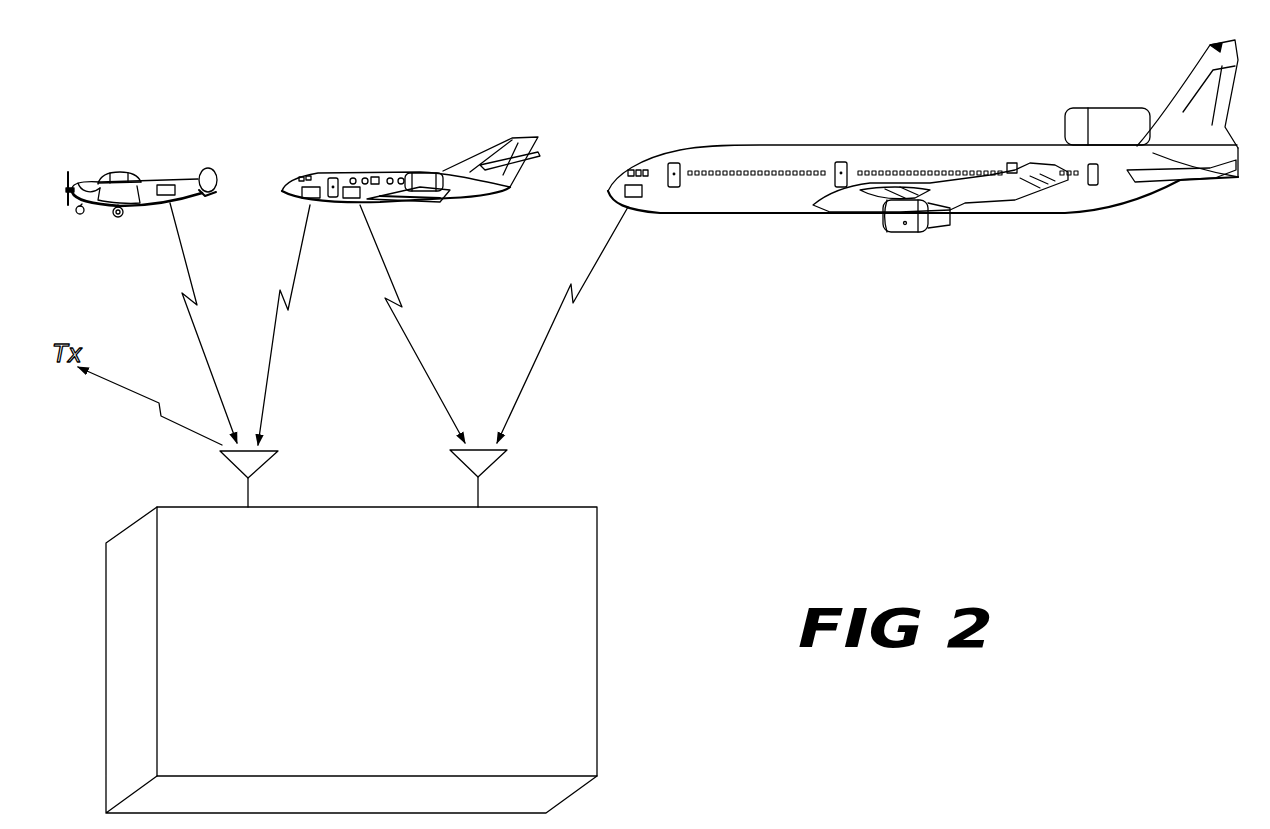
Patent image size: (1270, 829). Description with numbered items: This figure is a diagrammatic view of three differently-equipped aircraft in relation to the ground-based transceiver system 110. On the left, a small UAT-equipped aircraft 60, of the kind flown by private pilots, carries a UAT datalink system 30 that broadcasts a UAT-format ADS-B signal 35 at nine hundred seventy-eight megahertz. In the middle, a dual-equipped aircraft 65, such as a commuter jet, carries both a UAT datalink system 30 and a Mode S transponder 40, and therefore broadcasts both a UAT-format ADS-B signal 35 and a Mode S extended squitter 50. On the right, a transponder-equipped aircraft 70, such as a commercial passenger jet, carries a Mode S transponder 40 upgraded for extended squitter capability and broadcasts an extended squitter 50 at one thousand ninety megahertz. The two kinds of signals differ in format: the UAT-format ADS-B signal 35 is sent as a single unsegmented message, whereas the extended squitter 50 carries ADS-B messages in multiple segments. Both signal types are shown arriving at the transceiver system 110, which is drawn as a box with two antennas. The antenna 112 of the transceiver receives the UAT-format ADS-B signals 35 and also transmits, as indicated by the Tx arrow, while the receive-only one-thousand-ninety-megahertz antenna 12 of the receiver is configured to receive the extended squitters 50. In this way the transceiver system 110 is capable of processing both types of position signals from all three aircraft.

The UAT-equipped aircraft 60 is at (160, 180).
The dual-equipped aircraft 65 is at (385, 172).
The transponder-equipped aircraft 70 is at (795, 148).
The UAT datalink system 30 is at (158, 197).
The Mode S transponder 40 is at (362, 194).
The UAT-format ADS-B signal 35 is at (270, 348).
The Mode S extended squitter 50 is at (540, 348).
The antenna 112 is at (240, 460).
The 1090 MHz antenna 12 is at (488, 457).
The transceiver system 110 is at (390, 650).